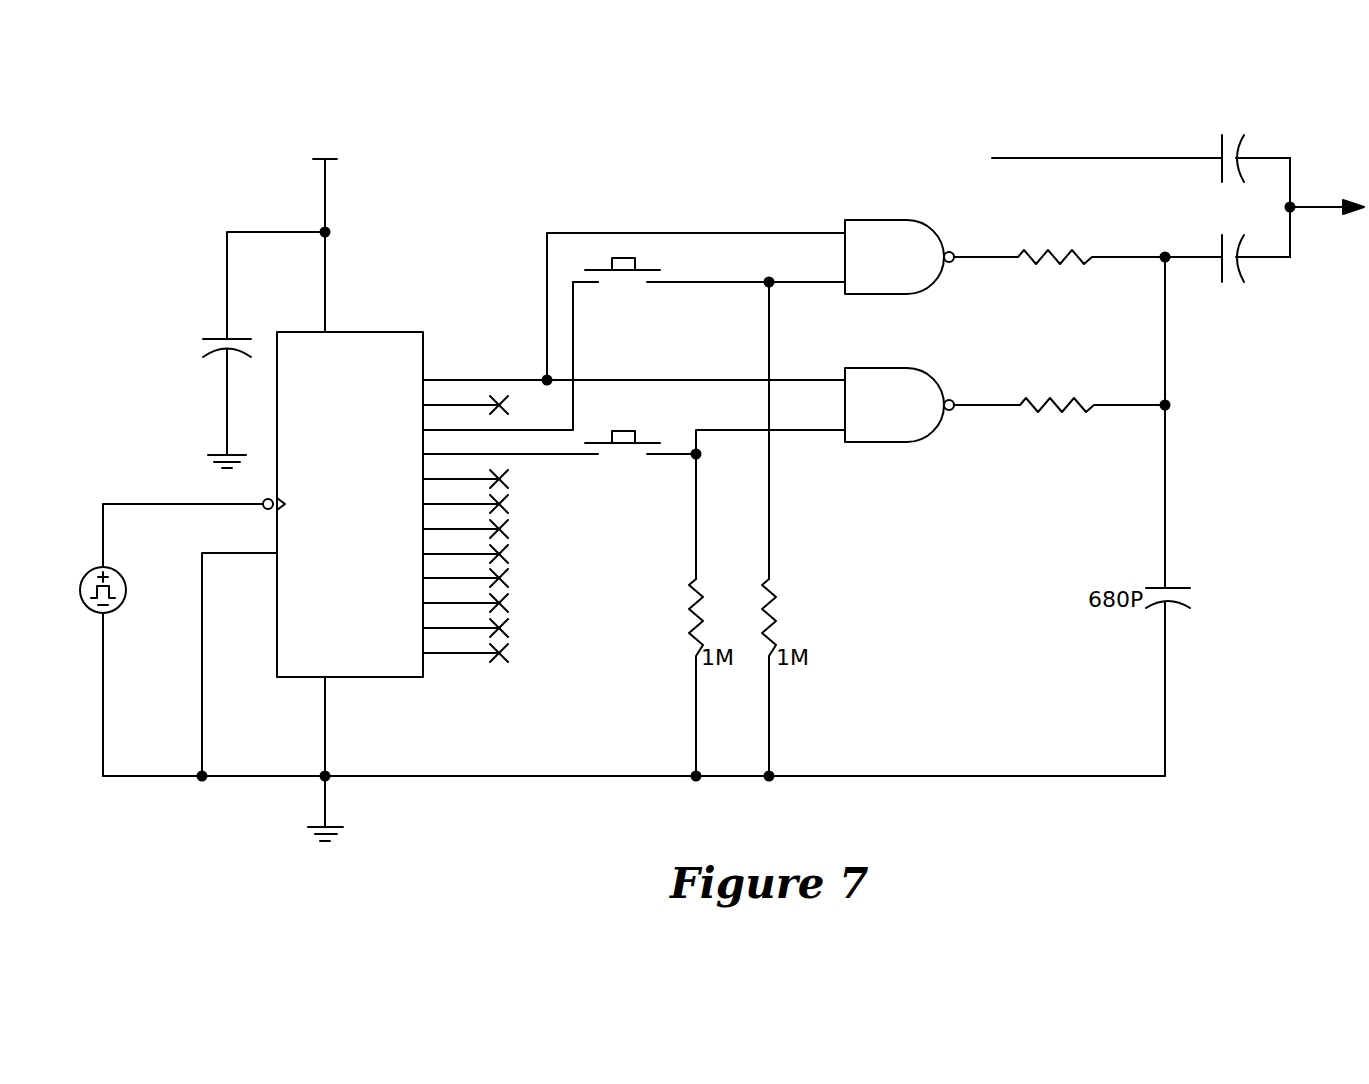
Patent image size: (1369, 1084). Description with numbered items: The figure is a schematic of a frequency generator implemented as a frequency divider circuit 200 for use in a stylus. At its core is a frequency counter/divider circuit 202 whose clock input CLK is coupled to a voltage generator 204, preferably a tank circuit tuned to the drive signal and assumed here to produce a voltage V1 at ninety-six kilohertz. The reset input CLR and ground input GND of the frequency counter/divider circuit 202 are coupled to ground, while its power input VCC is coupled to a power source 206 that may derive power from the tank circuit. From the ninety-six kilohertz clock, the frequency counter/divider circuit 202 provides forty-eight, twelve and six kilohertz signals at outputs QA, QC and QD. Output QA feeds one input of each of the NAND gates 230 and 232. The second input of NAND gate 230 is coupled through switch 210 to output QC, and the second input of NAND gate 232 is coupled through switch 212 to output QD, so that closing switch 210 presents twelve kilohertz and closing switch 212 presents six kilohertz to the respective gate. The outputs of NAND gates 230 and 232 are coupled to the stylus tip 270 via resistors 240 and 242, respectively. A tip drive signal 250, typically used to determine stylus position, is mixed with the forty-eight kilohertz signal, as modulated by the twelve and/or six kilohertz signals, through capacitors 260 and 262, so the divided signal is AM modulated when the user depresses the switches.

The frequency divider circuit 200 is at (176, 183).
The frequency counter/divider circuit 202 is at (390, 331).
The voltage generator 204 is at (78, 588).
The power source 206 is at (329, 160).
The switch 210 is at (648, 272).
The switch 212 is at (648, 445).
The NAND gate 230 is at (884, 230).
The NAND gate 232 is at (884, 378).
The resistor 240 is at (1061, 269).
The resistor 242 is at (1062, 417).
The tip drive signal 250 is at (1075, 157).
The capacitor 260 is at (1222, 146).
The capacitor 262 is at (1220, 244).
The stylus tip 270 is at (1322, 209).